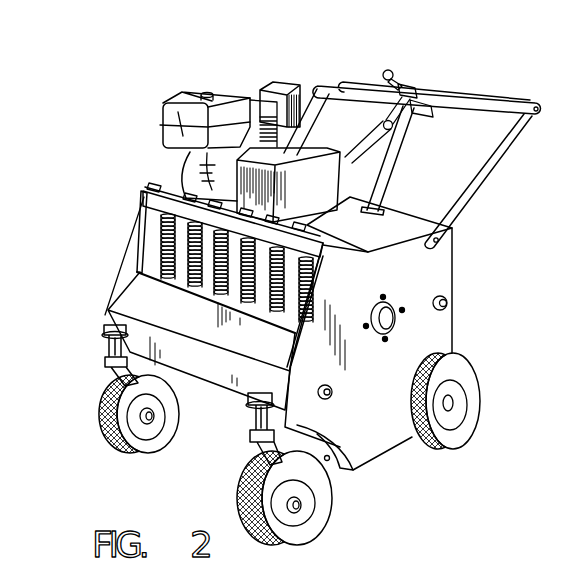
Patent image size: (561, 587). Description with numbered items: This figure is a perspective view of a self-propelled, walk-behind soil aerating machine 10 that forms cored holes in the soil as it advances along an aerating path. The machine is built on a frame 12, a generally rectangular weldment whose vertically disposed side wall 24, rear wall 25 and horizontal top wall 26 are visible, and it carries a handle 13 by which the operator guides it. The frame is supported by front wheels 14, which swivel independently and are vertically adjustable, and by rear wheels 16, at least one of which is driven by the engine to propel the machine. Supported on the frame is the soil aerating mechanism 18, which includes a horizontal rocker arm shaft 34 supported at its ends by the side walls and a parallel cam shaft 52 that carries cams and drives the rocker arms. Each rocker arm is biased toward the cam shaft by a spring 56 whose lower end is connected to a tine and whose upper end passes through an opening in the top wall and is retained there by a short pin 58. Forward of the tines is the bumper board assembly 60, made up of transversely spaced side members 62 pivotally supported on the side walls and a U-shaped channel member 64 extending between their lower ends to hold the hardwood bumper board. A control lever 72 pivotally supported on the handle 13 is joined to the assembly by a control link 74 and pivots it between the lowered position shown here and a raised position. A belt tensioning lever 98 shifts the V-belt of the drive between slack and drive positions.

The soil aerating machine 10 is at (468, 78).
The frame 12 is at (465, 270).
The handle 13 is at (489, 98).
The front wheels 14 is at (102, 446).
The rear wheels 16 is at (471, 387).
The soil aerating mechanism 18 is at (152, 242).
The left side wall 24 is at (433, 333).
The rear wall 25 is at (453, 242).
The top wall 26 is at (410, 218).
The rocker arm shaft 34 is at (449, 304).
The cam shaft 52 is at (397, 334).
The spring 56 is at (210, 298).
The short pin 58 is at (186, 195).
The bumper board assembly 60 is at (194, 421).
The side members 62 is at (353, 470).
The U-shaped channel member 64 is at (243, 422).
The control lever 72 is at (380, 118).
The control link 74 is at (407, 139).
The belt tensioning lever 98 is at (388, 70).